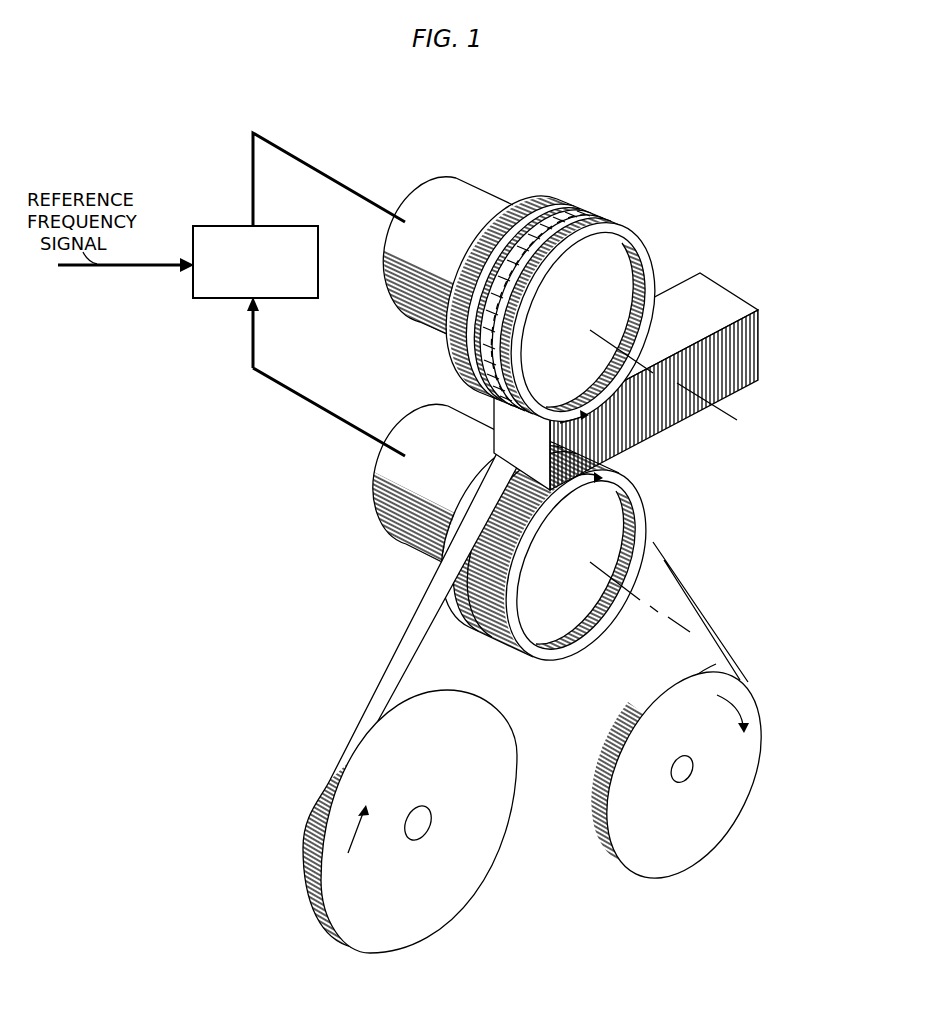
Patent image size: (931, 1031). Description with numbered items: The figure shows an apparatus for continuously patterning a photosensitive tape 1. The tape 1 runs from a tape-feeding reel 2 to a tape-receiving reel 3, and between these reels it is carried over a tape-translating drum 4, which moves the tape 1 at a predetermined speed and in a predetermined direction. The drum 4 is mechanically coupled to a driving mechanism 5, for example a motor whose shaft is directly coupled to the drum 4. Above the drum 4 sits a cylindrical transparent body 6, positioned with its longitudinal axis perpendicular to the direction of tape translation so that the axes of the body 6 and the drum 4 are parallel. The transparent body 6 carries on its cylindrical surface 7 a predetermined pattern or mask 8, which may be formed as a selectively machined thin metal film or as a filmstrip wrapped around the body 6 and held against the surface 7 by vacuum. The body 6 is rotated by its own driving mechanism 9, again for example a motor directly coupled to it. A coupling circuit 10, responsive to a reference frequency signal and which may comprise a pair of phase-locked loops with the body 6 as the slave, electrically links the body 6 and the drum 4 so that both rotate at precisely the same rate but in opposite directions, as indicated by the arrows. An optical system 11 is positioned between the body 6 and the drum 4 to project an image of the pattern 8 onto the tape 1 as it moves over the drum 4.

The photosensitive tape 1 is at (412, 643).
The tape-feeding reel 2 is at (465, 892).
The tape-receiving reel 3 is at (698, 848).
The tape-translating drum 4 is at (560, 653).
The driving mechanism 5 is at (404, 540).
The cylindrical transparent body 6 is at (645, 255).
The cylindrical surface 7 is at (602, 223).
The pattern or mask 8 is at (547, 228).
The driving mechanism 9 is at (480, 197).
The coupling circuit 10 is at (222, 228).
The optical system 11 is at (757, 352).